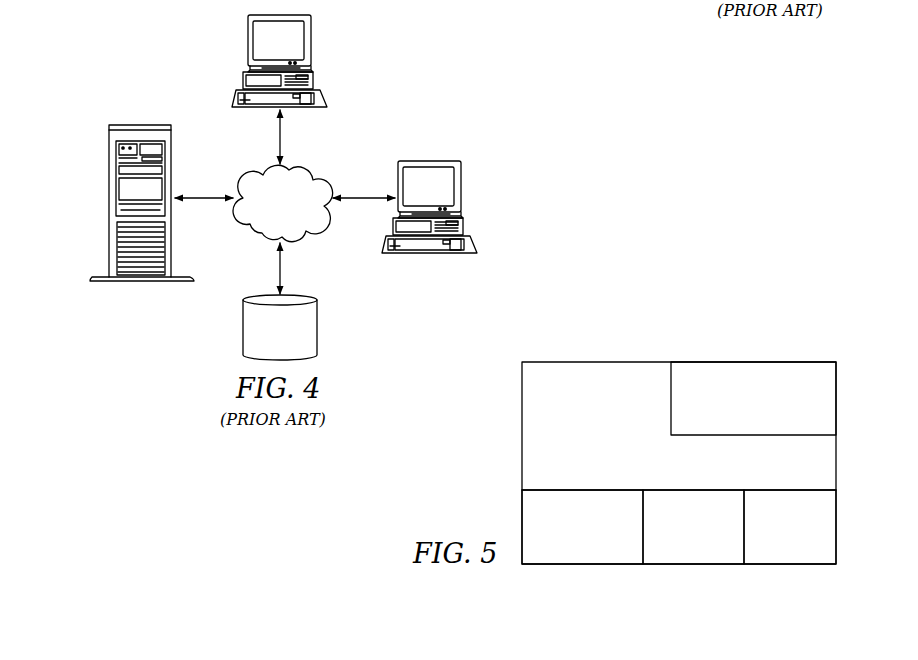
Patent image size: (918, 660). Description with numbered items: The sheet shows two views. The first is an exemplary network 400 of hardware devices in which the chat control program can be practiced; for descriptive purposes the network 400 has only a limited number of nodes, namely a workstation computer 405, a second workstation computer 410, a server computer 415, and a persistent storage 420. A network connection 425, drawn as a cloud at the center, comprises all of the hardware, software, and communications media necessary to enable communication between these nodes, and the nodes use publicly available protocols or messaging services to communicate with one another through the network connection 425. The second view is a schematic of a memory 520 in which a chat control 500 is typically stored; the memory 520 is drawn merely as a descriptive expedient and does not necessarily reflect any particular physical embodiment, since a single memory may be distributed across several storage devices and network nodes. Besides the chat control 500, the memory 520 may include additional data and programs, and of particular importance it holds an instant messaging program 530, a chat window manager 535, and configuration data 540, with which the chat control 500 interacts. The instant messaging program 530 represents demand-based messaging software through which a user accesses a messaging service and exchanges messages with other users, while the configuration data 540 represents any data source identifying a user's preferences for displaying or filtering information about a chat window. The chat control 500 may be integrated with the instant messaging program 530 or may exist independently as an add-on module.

In FIG. 4, the exemplary network 400 is at (418, 78).
In FIG. 4, the workstation computer 405 is at (311, 41).
In FIG. 4, the workstation computer 410 is at (460, 197).
In FIG. 4, the server computer 415 is at (135, 281).
In FIG. 4, the persistent storage 420 is at (318, 325).
In FIG. 4, the network connection 425 is at (298, 213).
In FIG. 5, the chat control 500 is at (792, 490).
In FIG. 5, the memory 520 is at (706, 354).
In FIG. 5, the instant messaging program 530 is at (580, 490).
In FIG. 5, the chat window manager 535 is at (678, 490).
In FIG. 5, the configuration data 540 is at (733, 435).